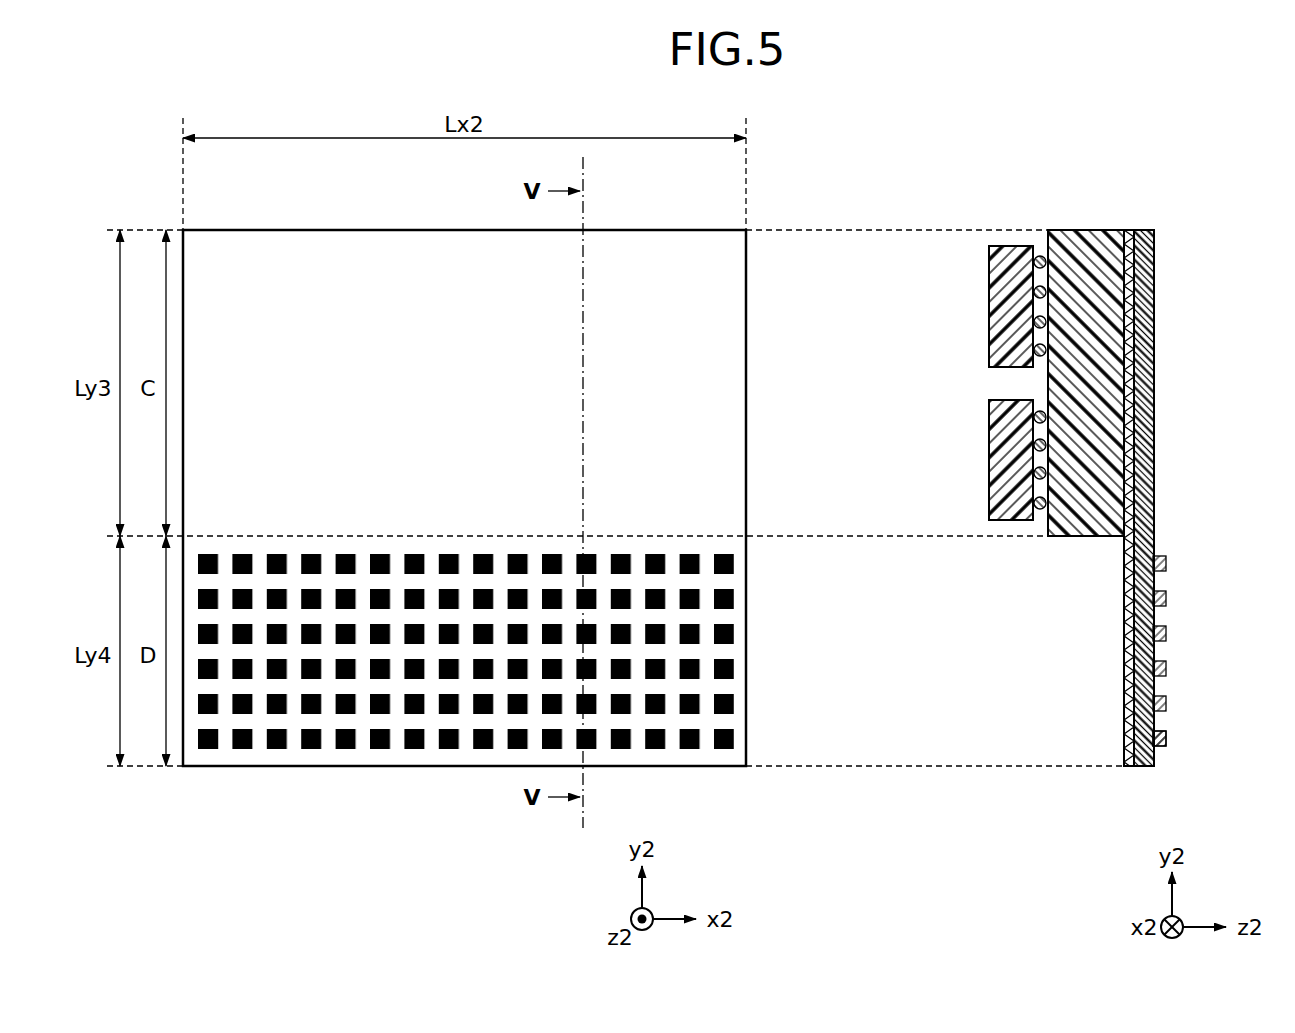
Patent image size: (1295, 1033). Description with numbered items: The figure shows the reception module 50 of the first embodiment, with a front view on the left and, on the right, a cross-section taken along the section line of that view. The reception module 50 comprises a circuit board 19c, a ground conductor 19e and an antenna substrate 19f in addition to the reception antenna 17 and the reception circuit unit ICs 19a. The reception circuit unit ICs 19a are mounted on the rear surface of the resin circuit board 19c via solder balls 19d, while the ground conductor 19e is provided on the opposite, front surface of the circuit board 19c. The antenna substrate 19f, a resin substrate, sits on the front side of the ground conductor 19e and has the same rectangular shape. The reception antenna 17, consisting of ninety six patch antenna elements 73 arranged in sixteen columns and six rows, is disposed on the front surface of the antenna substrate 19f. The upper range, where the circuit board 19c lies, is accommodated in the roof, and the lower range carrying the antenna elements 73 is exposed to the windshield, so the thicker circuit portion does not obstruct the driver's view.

The reception module 50 is at (880, 137).
The reception antenna 17 is at (732, 768).
The antenna element 73 is at (206, 749).
The reception circuit unit IC 19a is at (1011, 252).
The circuit board 19c is at (1088, 243).
The solder ball 19d is at (1038, 254).
The ground conductor 19e is at (1128, 262).
The antenna substrate 19f is at (1143, 247).